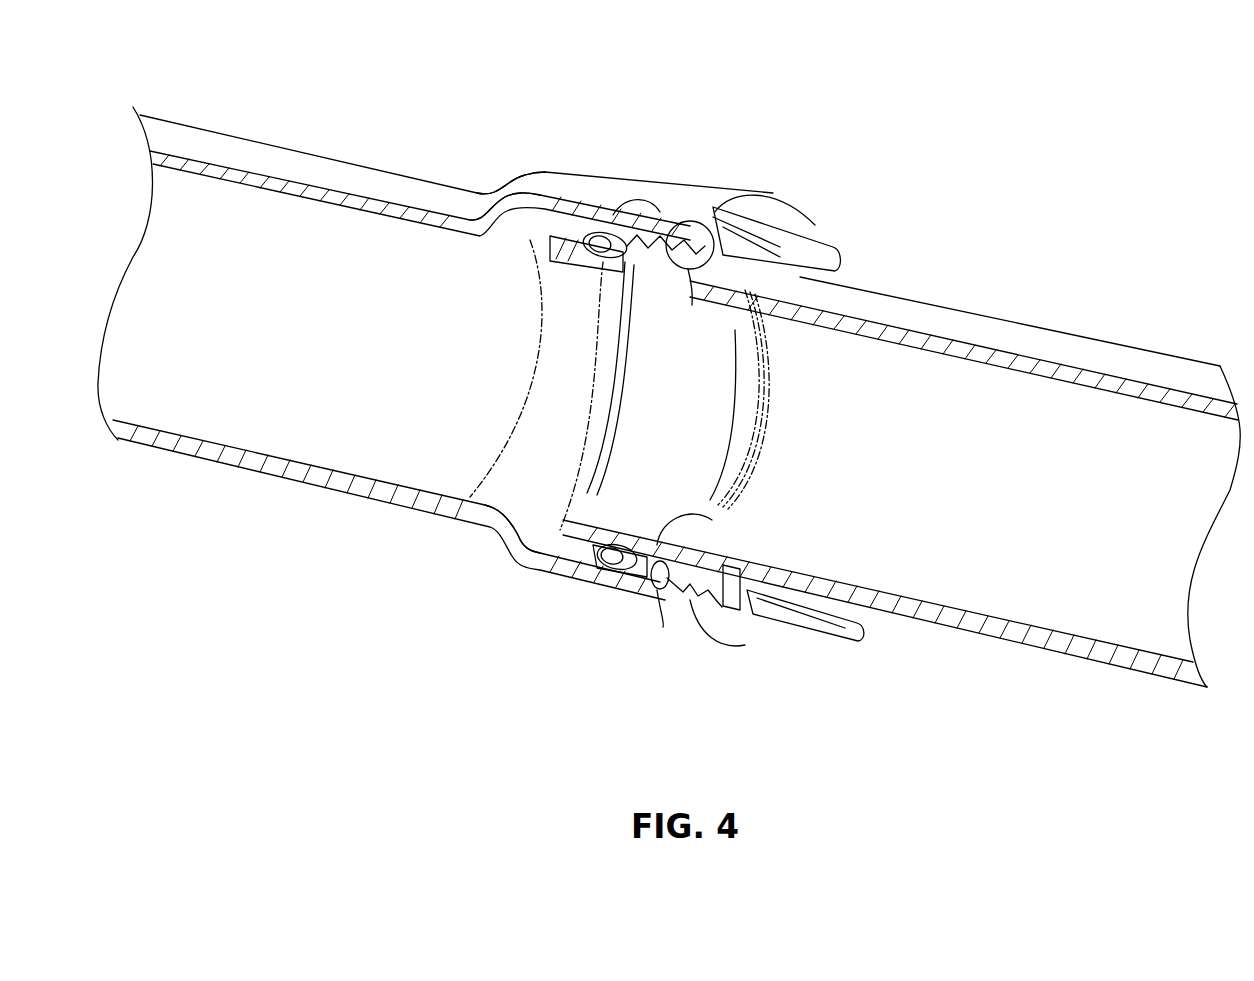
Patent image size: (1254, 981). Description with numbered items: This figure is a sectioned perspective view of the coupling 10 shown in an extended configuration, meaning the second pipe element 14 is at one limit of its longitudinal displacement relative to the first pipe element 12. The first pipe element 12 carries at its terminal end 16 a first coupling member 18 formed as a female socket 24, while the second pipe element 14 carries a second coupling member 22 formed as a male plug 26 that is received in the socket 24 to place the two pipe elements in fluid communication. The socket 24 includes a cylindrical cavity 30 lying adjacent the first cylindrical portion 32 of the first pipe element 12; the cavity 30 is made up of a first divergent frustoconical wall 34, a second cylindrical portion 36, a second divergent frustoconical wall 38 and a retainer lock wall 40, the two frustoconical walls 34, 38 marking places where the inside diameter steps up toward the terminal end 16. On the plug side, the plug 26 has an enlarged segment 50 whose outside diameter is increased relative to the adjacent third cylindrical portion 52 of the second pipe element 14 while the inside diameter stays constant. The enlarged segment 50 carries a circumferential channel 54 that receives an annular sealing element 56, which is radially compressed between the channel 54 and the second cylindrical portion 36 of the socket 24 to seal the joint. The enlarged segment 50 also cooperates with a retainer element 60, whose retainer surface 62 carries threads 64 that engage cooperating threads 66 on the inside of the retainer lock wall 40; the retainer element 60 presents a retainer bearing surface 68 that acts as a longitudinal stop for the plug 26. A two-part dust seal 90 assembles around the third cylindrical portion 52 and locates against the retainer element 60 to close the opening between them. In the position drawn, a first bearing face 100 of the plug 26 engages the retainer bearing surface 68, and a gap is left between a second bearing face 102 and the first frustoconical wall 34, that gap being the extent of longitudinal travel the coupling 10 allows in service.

The coupling 10 is at (735, 108).
The first pipe element 12 is at (394, 320).
The second pipe element 14 is at (901, 453).
The terminal end 16 is at (740, 200).
The first coupling member 18 is at (619, 166).
The female socket 24 is at (662, 215).
The second coupling member 22 is at (591, 595).
The male plug 26 is at (578, 558).
The cylindrical cavity 30 is at (552, 395).
The first cylindrical portion 32 is at (362, 226).
The first divergent frustoconical wall 34 is at (497, 218).
The second cylindrical portion 36 is at (540, 245).
The second divergent frustoconical wall 38 is at (592, 296).
The retainer lock wall 40 is at (744, 193).
The cooperating threads 66 is at (673, 200).
The enlarged segment 50 is at (700, 525).
The third cylindrical portion 52 is at (1035, 370).
The circumferential channel 54 is at (657, 545).
The annular sealing element 56 is at (600, 562).
The retainer element 60 is at (720, 600).
The retainer surface 62 is at (692, 312).
The threads 64 is at (713, 273).
The retainer bearing surface 68 is at (660, 585).
The dust seal 90 is at (768, 605).
The first bearing face 100 is at (713, 567).
The second bearing face 102 is at (568, 550).